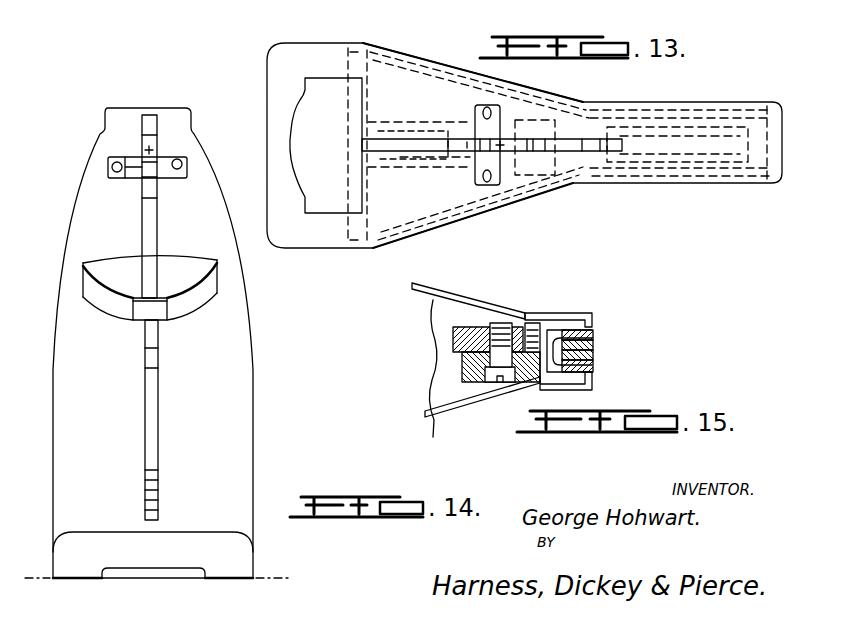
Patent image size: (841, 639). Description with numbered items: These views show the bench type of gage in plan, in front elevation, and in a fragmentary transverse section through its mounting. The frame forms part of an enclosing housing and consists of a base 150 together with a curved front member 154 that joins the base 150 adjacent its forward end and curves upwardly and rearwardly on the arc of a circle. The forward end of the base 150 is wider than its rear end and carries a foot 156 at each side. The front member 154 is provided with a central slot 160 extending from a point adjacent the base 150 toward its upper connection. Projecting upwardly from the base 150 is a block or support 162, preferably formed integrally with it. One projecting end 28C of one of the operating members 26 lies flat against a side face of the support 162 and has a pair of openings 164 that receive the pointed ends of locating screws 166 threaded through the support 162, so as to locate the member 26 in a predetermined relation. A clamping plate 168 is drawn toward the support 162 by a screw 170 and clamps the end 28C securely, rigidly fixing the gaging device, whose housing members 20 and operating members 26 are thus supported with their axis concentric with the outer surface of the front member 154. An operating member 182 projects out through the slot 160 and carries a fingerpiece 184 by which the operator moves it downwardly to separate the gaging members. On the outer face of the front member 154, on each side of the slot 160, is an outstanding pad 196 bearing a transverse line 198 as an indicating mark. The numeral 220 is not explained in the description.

In FIG. 14, the curved front member 154 is at (253, 395).
In FIG. 13, the curved front member 154 is at (548, 96).
In FIG. 14, the base 150 is at (152, 575).
In FIG. 14, the foot 156 is at (62, 578).
In FIG. 14, the central slot 160 is at (158, 422).
In FIG. 13, the central slot 160 is at (396, 138).
In FIG. 14, the transverse line 198 is at (108, 175).
In FIG. 13, the transverse line 198 is at (478, 162).
In FIG. 14, the pad 196 is at (110, 161).
In FIG. 13, the pad 196 is at (475, 112).
In FIG. 14, the fingerpiece 184 is at (193, 298).
In FIG. 13, the fingerpiece 184 is at (326, 145).
In FIG. 13, the operating member 182 is at (378, 152).
In FIG. 13, the leaf springs 220 is at (378, 250).
In FIG. 15, the leaf springs 220 is at (415, 283).
In FIG. 15, the block or support 162 is at (468, 300).
In FIG. 15, the openings 164 is at (535, 387).
In FIG. 15, the clamping plate 168 is at (468, 367).
In FIG. 15, the screw 170 is at (493, 378).
In FIG. 15, the projecting end 28C is at (532, 322).
In FIG. 15, the locating screws 166 is at (548, 330).
In FIG. 15, the housing members 20 is at (593, 333).
In FIG. 15, the main body portion of operating member 26 is at (593, 345).